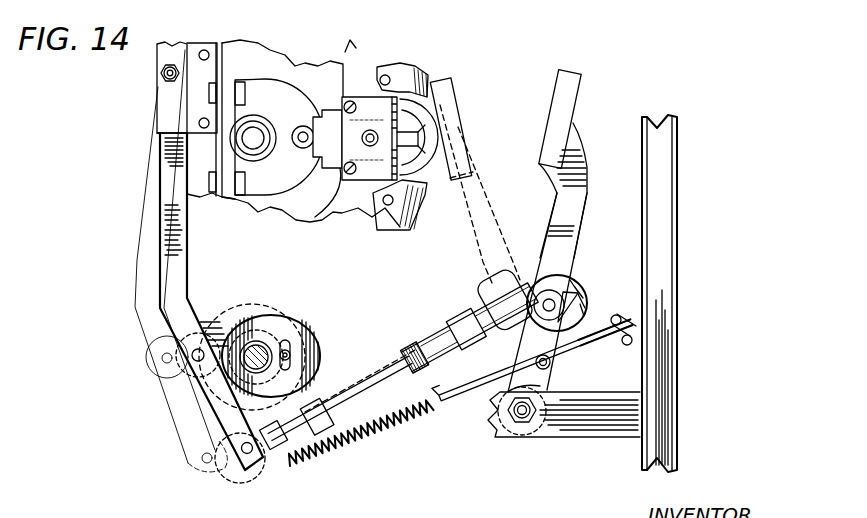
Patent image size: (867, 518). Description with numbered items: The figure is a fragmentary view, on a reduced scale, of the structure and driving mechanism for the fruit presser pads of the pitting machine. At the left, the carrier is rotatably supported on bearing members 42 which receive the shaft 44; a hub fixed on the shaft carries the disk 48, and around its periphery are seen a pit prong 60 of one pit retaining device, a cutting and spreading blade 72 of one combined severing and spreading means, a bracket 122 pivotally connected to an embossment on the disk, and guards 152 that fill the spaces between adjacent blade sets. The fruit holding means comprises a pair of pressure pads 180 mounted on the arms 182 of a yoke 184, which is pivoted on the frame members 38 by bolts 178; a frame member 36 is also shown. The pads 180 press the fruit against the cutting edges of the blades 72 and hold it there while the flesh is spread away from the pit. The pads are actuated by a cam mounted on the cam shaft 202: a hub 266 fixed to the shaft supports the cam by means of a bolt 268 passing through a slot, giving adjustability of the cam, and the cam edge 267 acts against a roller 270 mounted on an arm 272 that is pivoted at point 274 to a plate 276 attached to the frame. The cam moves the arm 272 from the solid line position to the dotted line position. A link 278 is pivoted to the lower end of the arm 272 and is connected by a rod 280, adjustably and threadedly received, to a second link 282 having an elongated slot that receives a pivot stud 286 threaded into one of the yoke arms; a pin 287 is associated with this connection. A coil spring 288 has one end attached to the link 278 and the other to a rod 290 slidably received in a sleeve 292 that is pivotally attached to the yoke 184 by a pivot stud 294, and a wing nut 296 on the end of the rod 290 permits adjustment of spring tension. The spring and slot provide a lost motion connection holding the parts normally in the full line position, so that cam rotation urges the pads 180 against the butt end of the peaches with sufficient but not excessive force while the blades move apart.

The channel member 36 is at (666, 375).
The lower side bars 38 is at (590, 433).
The bearing members 42 is at (232, 168).
The shaft 44 is at (257, 147).
The disk 48 is at (300, 222).
The pit prongs 60 is at (431, 180).
The cutting and spreading blade 72 is at (365, 110).
The bracket 122 is at (330, 116).
The guards 152 is at (397, 72).
The bolts 178 is at (522, 422).
The pressure pads 180 is at (450, 93).
The arms 182 is at (487, 177).
The yoke 184 is at (572, 247).
The cam shaft 202 is at (258, 346).
The hub 266 is at (247, 345).
The cam plate edge 267 is at (300, 322).
The bolt 268 is at (291, 355).
The roller 270 is at (182, 363).
The arm 272 is at (163, 274).
The pivot point 274 is at (162, 74).
The plate 276 is at (170, 108).
The link 278 is at (267, 468).
The rod 280 is at (420, 373).
The second link 282 is at (473, 327).
The pivot stud 286 is at (566, 289).
The pin 287 is at (571, 302).
The coil spring 288 is at (348, 452).
The rod 290 is at (462, 396).
The sleeve 292 is at (579, 350).
The pivot stud 294 is at (556, 368).
The wing nut 296 is at (624, 322).